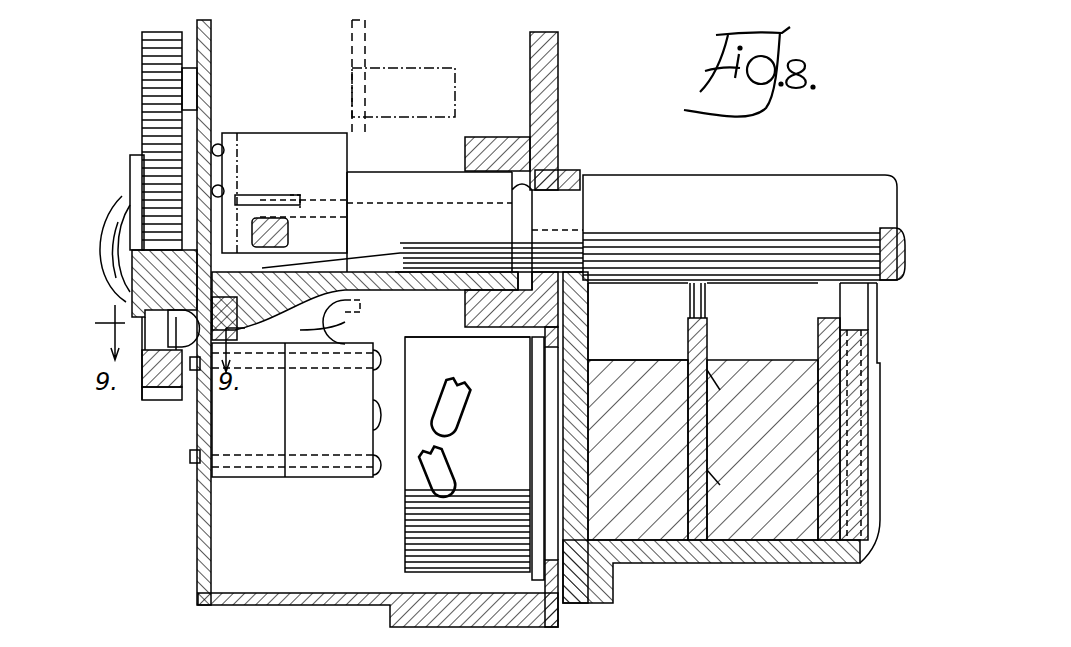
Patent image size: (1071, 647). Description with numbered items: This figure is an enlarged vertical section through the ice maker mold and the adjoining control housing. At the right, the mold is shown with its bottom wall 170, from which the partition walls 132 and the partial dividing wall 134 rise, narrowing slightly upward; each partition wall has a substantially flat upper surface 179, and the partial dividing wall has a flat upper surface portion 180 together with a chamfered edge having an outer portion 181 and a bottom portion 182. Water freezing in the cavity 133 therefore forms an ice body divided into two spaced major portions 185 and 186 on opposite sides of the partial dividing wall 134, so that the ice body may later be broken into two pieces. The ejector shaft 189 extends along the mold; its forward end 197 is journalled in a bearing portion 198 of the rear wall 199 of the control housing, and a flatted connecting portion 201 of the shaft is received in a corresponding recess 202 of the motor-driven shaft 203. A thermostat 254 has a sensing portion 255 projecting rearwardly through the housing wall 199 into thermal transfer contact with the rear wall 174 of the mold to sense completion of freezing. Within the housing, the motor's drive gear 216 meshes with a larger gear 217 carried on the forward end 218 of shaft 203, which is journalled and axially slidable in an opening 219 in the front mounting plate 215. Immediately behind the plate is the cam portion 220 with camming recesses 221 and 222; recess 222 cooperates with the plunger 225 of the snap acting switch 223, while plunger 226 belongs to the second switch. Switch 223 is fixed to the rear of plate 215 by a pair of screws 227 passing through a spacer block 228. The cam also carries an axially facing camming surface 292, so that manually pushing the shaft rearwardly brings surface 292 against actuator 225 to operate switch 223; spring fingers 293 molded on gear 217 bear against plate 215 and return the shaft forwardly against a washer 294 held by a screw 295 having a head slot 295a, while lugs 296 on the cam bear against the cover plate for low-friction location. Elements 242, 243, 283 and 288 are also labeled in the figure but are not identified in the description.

The partition walls 132 is at (840, 350).
The cavity 133 is at (750, 290).
The partial dividing wall 134 is at (700, 483).
The bottom wall 170 is at (790, 560).
The rear wall of the mold 174 is at (590, 330).
The upper surface 179 is at (818, 322).
The upper surface portion 180 is at (705, 305).
The outer portion 181 is at (688, 325).
The bottom portion 182 is at (713, 420).
The major portion of the ice body 185 is at (650, 510).
The major portion of the ice body 186 is at (752, 520).
The ejector shaft 189 is at (838, 175).
The forward end of the ejector shaft 197 is at (568, 170).
The bearing portion 198 is at (485, 137).
The rear wall of the housing 199 is at (558, 98).
The flatted connecting portion 201 is at (512, 195).
The recess 202 is at (380, 260).
The shaft 203 is at (432, 162).
The front mounting plate 215 is at (211, 48).
The drive gear 216 is at (142, 42).
The larger gear 217 is at (150, 86).
The forward end of the shaft 218 is at (135, 306).
The opening 219 is at (237, 330).
The cam portion 220 is at (296, 133).
The camming recess 221 is at (312, 208).
The camming recess 222 is at (345, 330).
The snap acting switch 223 is at (341, 445).
The plunger 225 is at (362, 306).
The plunger 226 is at (285, 200).
The screws 227 is at (376, 420).
The spacer block 228 is at (258, 445).
The key 242 is at (290, 240).
The slot 243 is at (296, 193).
The thermostat 254 is at (403, 526).
The sensing portion 255 is at (592, 390).
The line 283 is at (366, 24).
The box 288 is at (398, 66).
The camming surface 292 is at (302, 345).
The spring fingers 293 is at (142, 380).
The washer 294 is at (130, 160).
The screw 295 is at (128, 200).
The head slot 295a is at (116, 250).
The lugs 296 is at (220, 144).